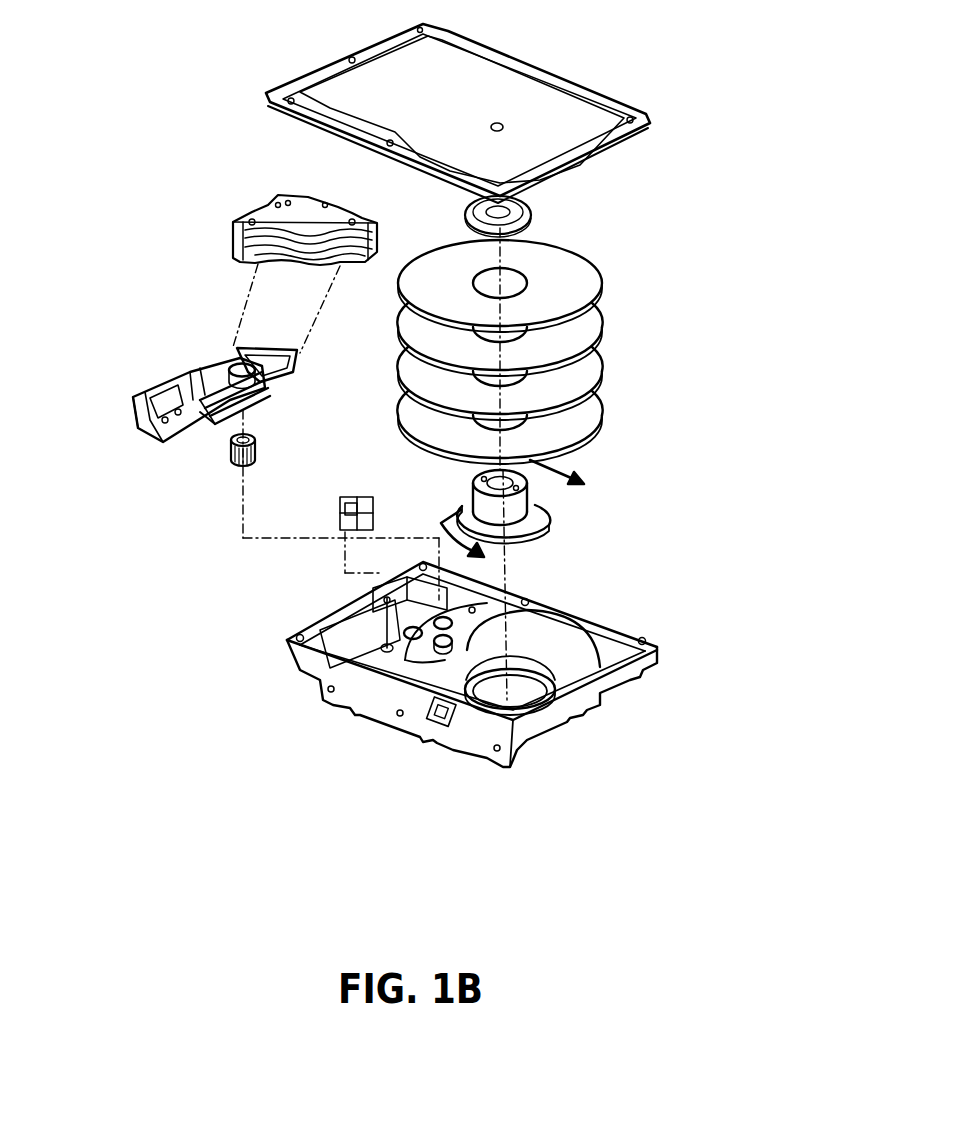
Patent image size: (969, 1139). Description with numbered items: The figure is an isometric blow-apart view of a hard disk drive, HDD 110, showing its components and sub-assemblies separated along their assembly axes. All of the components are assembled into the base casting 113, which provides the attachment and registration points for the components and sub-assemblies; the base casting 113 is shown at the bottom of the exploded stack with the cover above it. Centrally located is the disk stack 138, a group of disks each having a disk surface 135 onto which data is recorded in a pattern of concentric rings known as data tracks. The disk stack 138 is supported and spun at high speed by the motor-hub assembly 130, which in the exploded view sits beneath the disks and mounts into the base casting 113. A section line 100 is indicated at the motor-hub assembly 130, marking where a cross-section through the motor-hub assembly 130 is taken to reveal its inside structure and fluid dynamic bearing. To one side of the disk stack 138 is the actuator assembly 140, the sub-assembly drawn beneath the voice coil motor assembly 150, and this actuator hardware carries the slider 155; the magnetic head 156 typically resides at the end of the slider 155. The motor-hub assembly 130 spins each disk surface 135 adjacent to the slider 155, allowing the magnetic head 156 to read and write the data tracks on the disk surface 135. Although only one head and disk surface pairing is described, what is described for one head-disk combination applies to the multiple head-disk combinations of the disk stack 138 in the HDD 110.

The section line 100 is at (590, 487).
The hard disk drive (HDD) 110 is at (648, 750).
The base casting 113 is at (302, 658).
The motor-hub assembly 130 is at (547, 517).
The disk surface 135 is at (637, 460).
The disk stack 138 is at (562, 326).
The actuator arm assembly 140 is at (230, 358).
The voice coil motor 150 is at (230, 203).
The slider 155 is at (195, 433).
The magnetic head 156 is at (193, 432).